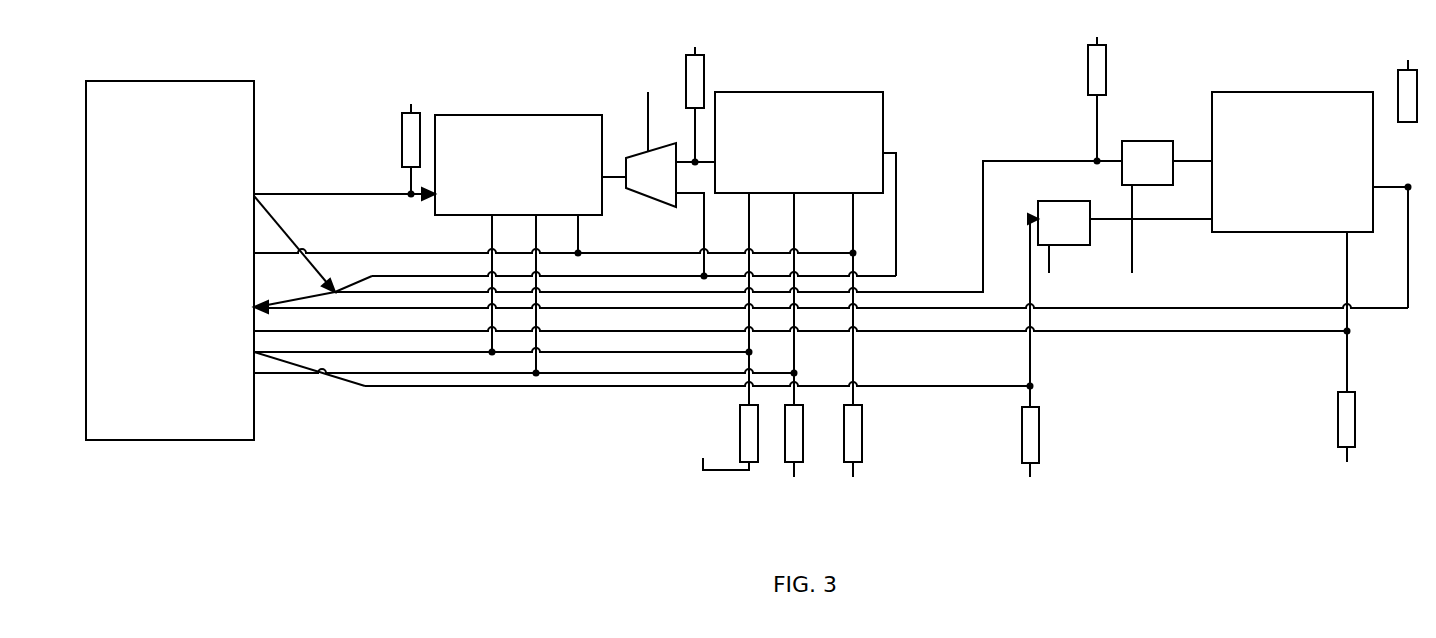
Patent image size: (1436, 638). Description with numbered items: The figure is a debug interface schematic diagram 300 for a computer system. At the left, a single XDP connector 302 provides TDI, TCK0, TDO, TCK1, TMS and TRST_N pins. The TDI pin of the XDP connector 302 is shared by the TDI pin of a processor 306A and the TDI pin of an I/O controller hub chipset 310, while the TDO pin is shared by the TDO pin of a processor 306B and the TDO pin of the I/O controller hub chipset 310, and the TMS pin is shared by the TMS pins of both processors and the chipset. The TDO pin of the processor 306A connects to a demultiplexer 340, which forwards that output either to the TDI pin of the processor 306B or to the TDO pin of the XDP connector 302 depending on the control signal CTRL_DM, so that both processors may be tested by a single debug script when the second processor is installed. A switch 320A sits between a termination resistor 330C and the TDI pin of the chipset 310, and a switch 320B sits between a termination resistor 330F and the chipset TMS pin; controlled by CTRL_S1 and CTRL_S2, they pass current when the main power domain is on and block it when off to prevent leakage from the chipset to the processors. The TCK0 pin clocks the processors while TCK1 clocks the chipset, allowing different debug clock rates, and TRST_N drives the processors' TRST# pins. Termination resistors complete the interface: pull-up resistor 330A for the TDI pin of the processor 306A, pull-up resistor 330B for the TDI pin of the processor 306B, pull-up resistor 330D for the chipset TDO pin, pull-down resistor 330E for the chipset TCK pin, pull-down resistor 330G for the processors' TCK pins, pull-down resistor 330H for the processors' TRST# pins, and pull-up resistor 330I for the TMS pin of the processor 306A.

The debug interface schematic diagram 300 is at (660, 526).
The single XDP connector 302 is at (200, 80).
The processor 306A is at (522, 115).
The processor 306B is at (818, 92).
The I/O controller hub chipset 310 is at (1288, 92).
The switch 320A is at (1160, 139).
The switch 320B is at (1055, 201).
The termination resistor 330A is at (400, 143).
The termination resistor 330B is at (683, 72).
The termination resistor 330C is at (1087, 82).
The termination resistor 330D is at (1396, 92).
The termination resistor 330E is at (1336, 418).
The termination resistor 330F is at (1020, 432).
The termination resistor 330G is at (862, 430).
The termination resistor 330H is at (803, 433).
The termination resistor 330I is at (738, 430).
The demultiplexer 340 is at (658, 204).